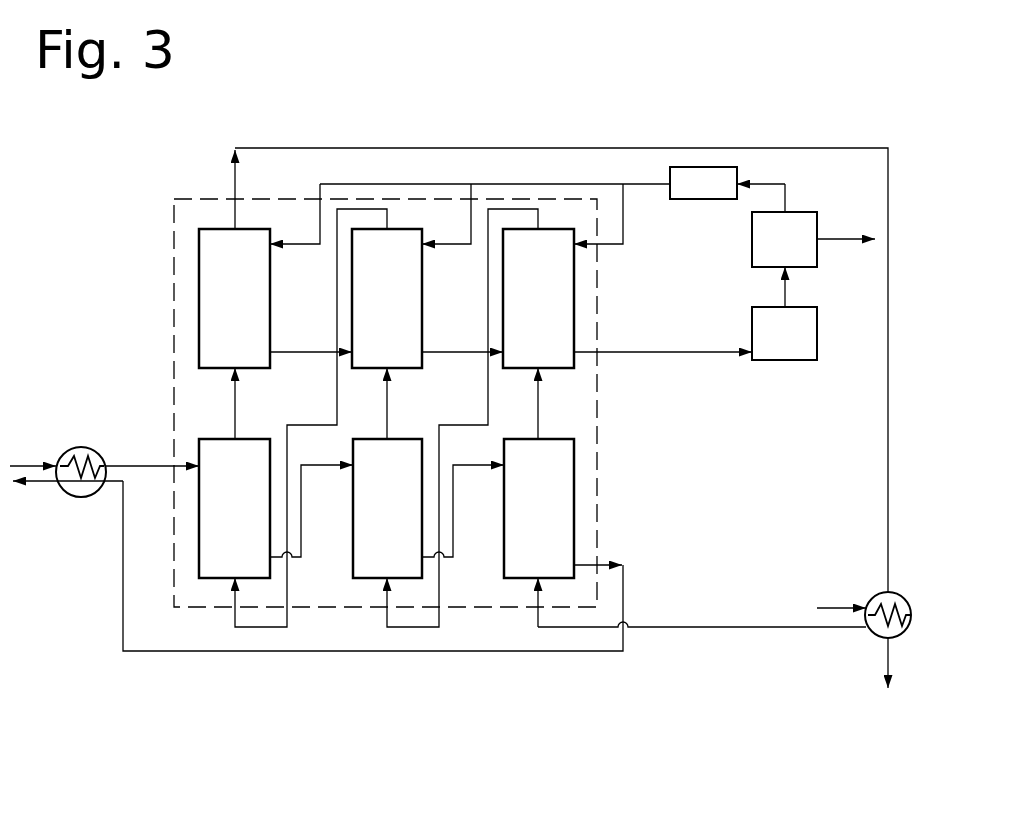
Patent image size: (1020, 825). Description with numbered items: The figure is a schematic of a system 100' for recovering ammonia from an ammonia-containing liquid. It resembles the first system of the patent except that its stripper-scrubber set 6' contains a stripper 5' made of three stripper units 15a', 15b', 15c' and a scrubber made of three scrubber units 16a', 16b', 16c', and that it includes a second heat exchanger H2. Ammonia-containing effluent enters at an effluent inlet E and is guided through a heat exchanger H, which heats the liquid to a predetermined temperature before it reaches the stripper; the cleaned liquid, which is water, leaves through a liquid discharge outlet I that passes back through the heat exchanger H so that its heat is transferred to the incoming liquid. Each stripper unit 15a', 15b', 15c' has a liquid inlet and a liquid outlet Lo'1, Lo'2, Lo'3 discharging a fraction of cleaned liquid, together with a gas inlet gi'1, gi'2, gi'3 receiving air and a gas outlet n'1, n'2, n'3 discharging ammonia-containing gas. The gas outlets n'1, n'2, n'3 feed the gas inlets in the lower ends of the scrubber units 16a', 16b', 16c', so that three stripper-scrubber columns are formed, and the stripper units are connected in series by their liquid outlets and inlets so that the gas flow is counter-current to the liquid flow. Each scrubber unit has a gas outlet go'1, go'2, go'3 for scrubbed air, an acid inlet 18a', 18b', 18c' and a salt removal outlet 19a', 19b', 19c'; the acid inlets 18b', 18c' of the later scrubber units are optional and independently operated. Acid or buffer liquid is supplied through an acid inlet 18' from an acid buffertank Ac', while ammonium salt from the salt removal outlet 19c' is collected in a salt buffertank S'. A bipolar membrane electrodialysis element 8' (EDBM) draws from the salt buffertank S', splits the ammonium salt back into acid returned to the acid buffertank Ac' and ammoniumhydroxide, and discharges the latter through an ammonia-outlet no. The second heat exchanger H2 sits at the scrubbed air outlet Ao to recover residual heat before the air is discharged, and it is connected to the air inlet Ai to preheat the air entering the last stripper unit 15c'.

The system 100' is at (121, 152).
The stripper 5' is at (420, 403).
The stripper-scrubber set 6' is at (142, 219).
The first scrubber unit 16a' is at (234, 298).
The second scrubber unit 16b' is at (387, 298).
The third scrubber unit 16c' is at (538, 298).
The first stripper unit 15a' is at (234, 508).
The second stripper unit 15b' is at (387, 508).
The third stripper unit 15c' is at (539, 508).
The acid inlet 18' is at (502, 222).
The acid inlet of first scrubber unit 18a' is at (317, 155).
The acid inlet of second scrubber unit 18b' is at (466, 154).
The acid inlet of third scrubber unit 18c' is at (617, 154).
The salt removal outlet of first scrubber unit 19a' is at (311, 328).
The salt removal outlet of second scrubber unit 19b' is at (462, 328).
The salt removal outlet of third scrubber unit 19c' is at (663, 326).
The acid buffertank Ac' is at (727, 147).
The bipolar membrane electrodialysis element (EDBM) 8' is at (794, 236).
The salt buffertank S' is at (795, 362).
The ammonia-outlet no is at (843, 240).
The gas outlet of scrubber unit go'1 is at (571, 166).
The gas outlet of scrubber unit go'2 is at (420, 166).
The gas outlet of scrubber unit go'3 is at (268, 165).
The gas inlet of stripper unit gi'1 is at (667, 639).
The gas inlet of stripper unit gi'2 is at (428, 454).
The gas inlet of stripper unit gi'3 is at (273, 454).
The gas outlet of stripper unit n'1 is at (517, 404).
The gas outlet of stripper unit n'2 is at (366, 404).
The gas outlet of stripper unit n'3 is at (214, 404).
The liquid outlet of stripper unit Lo'1 is at (310, 610).
The liquid outlet of stripper unit Lo'2 is at (463, 607).
The liquid outlet of stripper unit Lo'3 is at (398, 566).
The heat exchanger H is at (80, 450).
The second heat exchanger H2 is at (876, 598).
The effluent inlet E is at (22, 464).
The liquid discharge outlet I is at (45, 484).
The air inlet Ai is at (826, 608).
The scrubbed air outlet Ao is at (886, 652).